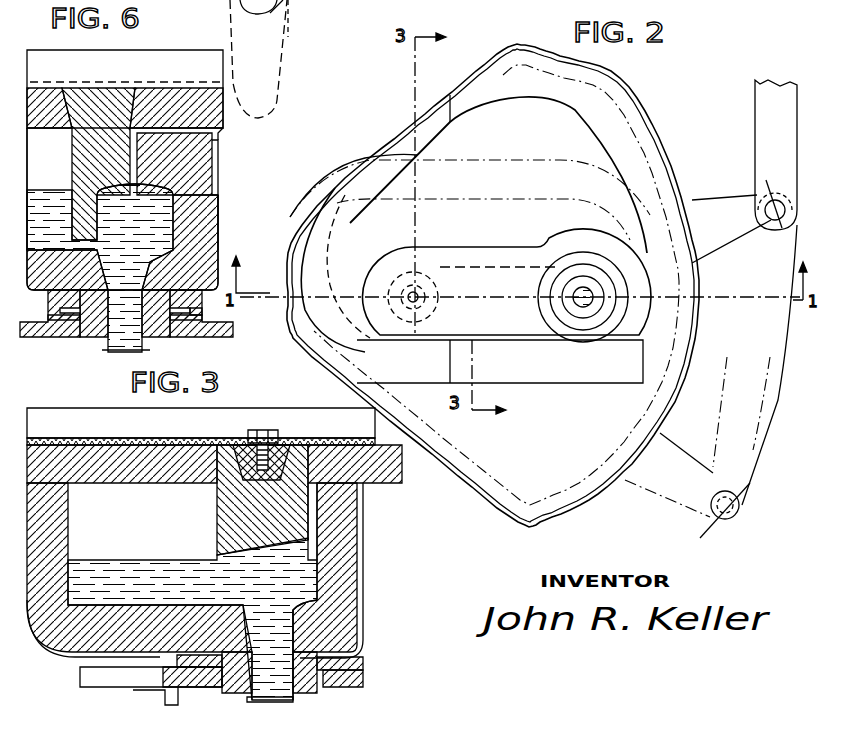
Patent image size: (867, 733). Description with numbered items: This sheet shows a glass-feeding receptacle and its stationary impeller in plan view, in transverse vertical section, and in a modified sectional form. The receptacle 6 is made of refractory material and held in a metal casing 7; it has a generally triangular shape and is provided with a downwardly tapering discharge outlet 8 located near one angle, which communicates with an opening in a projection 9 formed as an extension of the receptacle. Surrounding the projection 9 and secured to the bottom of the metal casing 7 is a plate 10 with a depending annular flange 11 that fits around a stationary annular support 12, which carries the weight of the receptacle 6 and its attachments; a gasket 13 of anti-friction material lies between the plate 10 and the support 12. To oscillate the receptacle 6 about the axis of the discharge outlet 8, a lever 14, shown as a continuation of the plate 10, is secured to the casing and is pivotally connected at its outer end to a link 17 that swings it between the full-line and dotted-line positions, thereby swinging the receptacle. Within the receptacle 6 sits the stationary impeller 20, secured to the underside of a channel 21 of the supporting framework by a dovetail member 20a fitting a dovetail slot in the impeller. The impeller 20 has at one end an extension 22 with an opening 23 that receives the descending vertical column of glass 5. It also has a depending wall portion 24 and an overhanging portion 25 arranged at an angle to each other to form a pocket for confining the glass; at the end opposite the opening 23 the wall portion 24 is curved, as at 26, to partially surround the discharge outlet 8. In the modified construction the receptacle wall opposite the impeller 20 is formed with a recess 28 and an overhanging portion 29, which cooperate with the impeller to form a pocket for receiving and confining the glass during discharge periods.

In FIG. 2, the vertical column of glass 5 is at (586, 303).
In FIG. 6, the receptacle 6 is at (193, 225).
In FIG. 3, the receptacle 6 is at (343, 565).
In FIG. 2, the receptacle 6 is at (607, 115).
In FIG. 6, the metal casing 7 is at (213, 243).
In FIG. 3, the metal casing 7 is at (363, 593).
In FIG. 2, the metal casing 7 is at (648, 142).
In FIG. 6, the discharge outlet 8 is at (163, 323).
In FIG. 3, the discharge outlet 8 is at (363, 628).
In FIG. 2, the discharge outlet 8 is at (437, 307).
In FIG. 6, the projection 9 is at (93, 323).
In FIG. 3, the projection 9 is at (230, 687).
In FIG. 6, the plate 10 is at (202, 312).
In FIG. 3, the plate 10 is at (363, 660).
In FIG. 3, the depending annular flange 11 is at (363, 678).
In FIG. 6, the stationary annular support 12 is at (45, 337).
In FIG. 3, the stationary annular support 12 is at (122, 687).
In FIG. 6, the gasket 13 is at (202, 337).
In FIG. 2, the lever 14 is at (710, 207).
In FIG. 2, the link 17 is at (767, 140).
In FIG. 6, the impeller 20 is at (76, 162).
In FIG. 3, the impeller 20 is at (218, 502).
In FIG. 2, the impeller 20 is at (443, 246).
In FIG. 3, the dovetail member 20a is at (224, 427).
In FIG. 3, the channel 21 is at (298, 443).
In FIG. 2, the extension 22 is at (632, 312).
In FIG. 2, the opening 23 is at (607, 290).
In FIG. 6, the depending wall portion 24 is at (70, 212).
In FIG. 3, the depending wall portion 24 is at (205, 575).
In FIG. 2, the depending wall portion 24 is at (490, 267).
In FIG. 3, the overhanging portion 25 is at (327, 523).
In FIG. 2, the overhanging portion 25 is at (520, 332).
In FIG. 2, the curved end of wall portion 26 is at (385, 297).
In FIG. 6, the recess 28 is at (187, 200).
In FIG. 6, the overhanging portion 29 is at (152, 163).